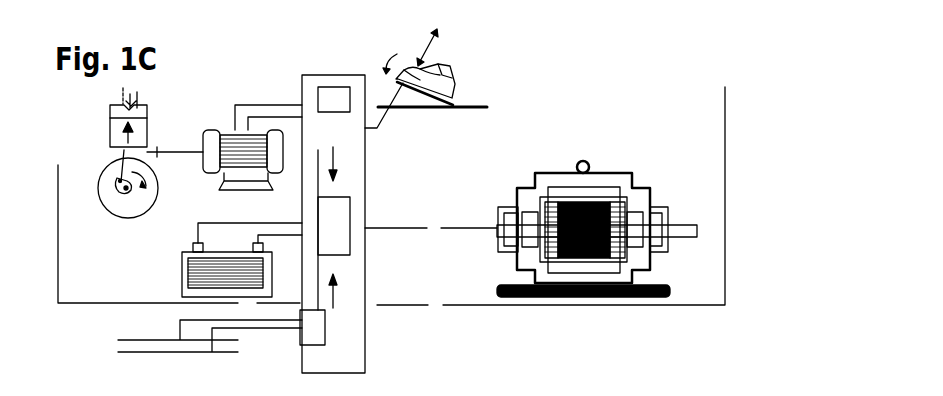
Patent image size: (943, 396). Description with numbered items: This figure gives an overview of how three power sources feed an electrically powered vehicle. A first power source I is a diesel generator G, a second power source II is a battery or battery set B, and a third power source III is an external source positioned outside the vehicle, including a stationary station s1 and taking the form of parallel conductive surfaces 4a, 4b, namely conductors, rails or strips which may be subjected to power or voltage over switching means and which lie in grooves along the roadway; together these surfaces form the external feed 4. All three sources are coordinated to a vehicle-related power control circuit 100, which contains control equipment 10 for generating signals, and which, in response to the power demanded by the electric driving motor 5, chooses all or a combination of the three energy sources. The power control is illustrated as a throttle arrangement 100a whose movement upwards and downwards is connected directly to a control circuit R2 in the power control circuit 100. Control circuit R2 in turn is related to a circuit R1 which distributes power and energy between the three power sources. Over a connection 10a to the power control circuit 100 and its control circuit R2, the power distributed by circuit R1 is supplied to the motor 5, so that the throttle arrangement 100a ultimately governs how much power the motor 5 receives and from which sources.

The power control circuit 100 is at (355, 363).
The control equipment 10 is at (315, 332).
The connection 10a is at (378, 130).
The throttle arrangement 100a is at (416, 61).
The control circuit R1 is at (337, 238).
The control circuit R2 is at (318, 93).
The electric driving motor 5 is at (607, 175).
The diesel generator G is at (230, 188).
The battery B is at (182, 285).
The first power source I is at (200, 153).
The second power source II is at (209, 260).
The third power source III is at (181, 340).
The stationary station s1 is at (181, 340).
The switch contact 4 is at (199, 337).
The parallel conductive surface 4a is at (199, 324).
The parallel conductive surface 4b is at (210, 330).